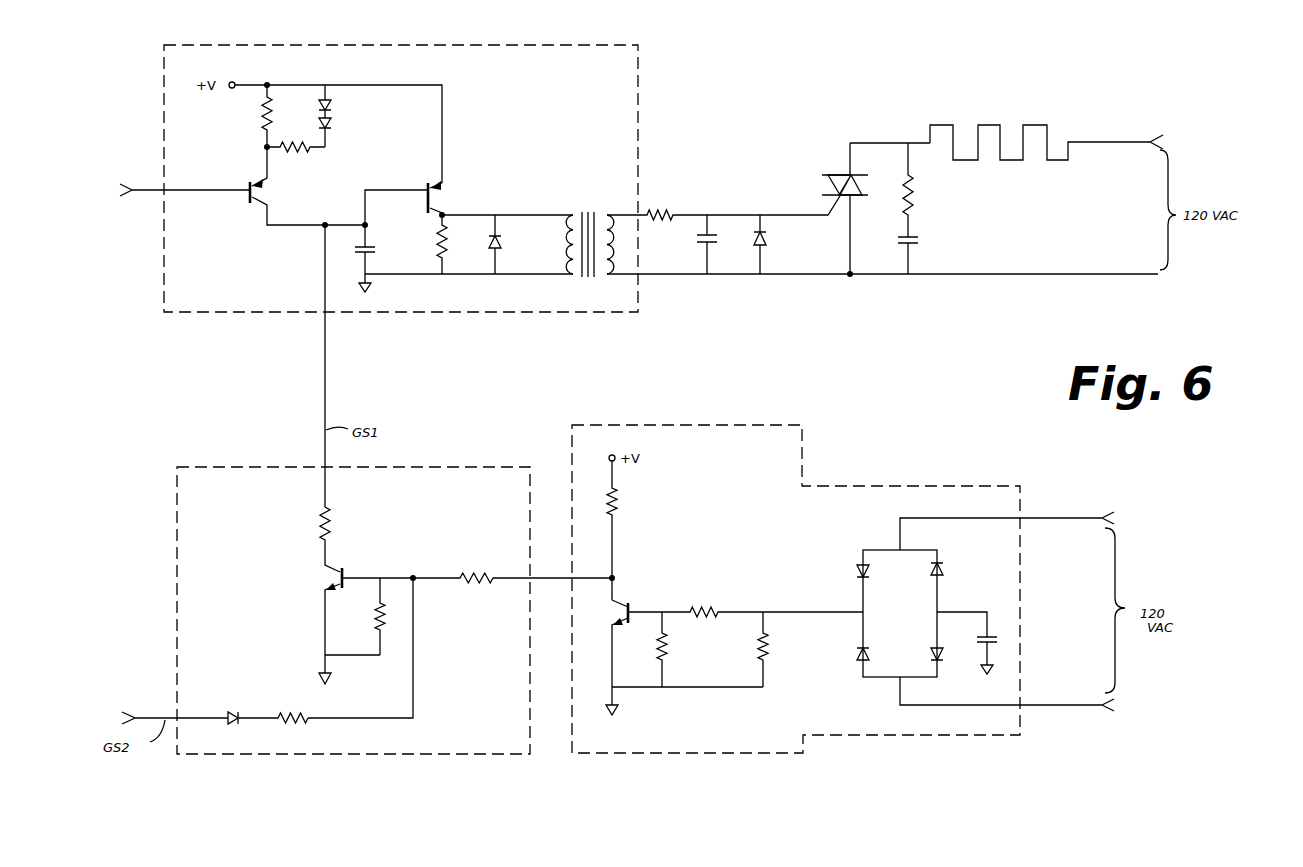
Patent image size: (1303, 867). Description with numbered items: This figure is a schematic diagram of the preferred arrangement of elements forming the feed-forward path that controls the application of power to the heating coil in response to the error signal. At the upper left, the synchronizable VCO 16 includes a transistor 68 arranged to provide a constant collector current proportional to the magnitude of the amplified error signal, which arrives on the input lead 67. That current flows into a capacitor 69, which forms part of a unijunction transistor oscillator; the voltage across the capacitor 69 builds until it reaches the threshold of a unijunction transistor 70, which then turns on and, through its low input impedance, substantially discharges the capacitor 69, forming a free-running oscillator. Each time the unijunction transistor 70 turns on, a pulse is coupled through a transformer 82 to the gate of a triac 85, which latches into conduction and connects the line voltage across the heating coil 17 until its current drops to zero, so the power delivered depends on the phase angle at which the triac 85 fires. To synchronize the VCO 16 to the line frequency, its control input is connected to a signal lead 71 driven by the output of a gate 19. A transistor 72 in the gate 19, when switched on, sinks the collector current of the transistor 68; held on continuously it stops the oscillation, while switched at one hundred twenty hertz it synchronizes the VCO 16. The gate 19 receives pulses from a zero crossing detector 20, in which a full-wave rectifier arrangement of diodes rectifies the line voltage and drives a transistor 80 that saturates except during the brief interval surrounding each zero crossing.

The VCO 16 is at (620, 53).
The heating coil 17 is at (1060, 160).
The gate 19 is at (182, 484).
The zero crossing detector 20 is at (1000, 450).
The input line K.Ee 67 is at (140, 195).
The transistor 68 is at (263, 186).
The capacitor 69 is at (372, 245).
The unijunction transistor 70 is at (440, 188).
The signal lead 71 is at (326, 392).
The transistor 72 is at (346, 573).
The transistor 80 is at (632, 608).
The transformer 82 is at (590, 212).
The triac 85 is at (828, 175).